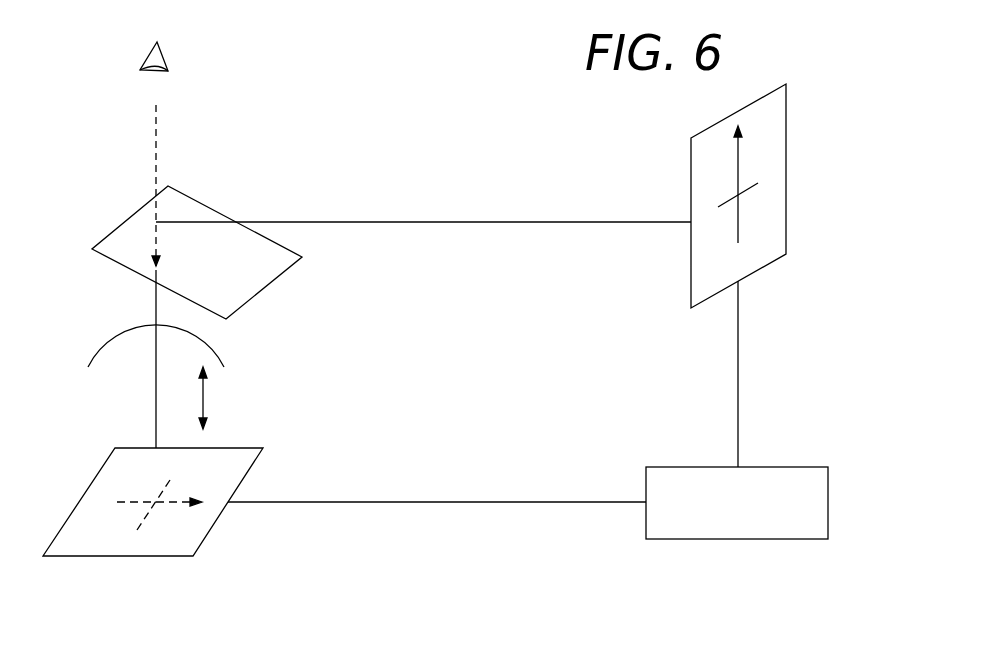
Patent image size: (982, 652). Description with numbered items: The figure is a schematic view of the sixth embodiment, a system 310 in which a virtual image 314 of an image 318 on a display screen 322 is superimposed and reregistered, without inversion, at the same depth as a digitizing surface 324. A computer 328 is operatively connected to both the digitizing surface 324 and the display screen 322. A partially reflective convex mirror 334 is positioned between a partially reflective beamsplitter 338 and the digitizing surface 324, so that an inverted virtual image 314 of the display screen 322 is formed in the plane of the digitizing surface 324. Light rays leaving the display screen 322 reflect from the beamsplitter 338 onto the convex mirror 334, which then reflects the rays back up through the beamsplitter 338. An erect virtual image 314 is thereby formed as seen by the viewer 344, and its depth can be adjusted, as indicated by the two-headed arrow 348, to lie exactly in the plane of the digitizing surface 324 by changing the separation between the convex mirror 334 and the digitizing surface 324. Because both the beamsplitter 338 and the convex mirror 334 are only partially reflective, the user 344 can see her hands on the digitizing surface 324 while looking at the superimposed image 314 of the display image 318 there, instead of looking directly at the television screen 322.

The system 310 is at (458, 173).
The virtual image 314 is at (145, 520).
The image 318 is at (747, 195).
The display screen 322 is at (764, 269).
The digitizing surface 324 is at (248, 475).
The computer 328 is at (737, 539).
The partially-reflective convex mirror 334 is at (207, 343).
The partially reflective beamsplitter 338 is at (267, 287).
The viewer 344 is at (167, 57).
The two-headed arrow 348 is at (203, 400).